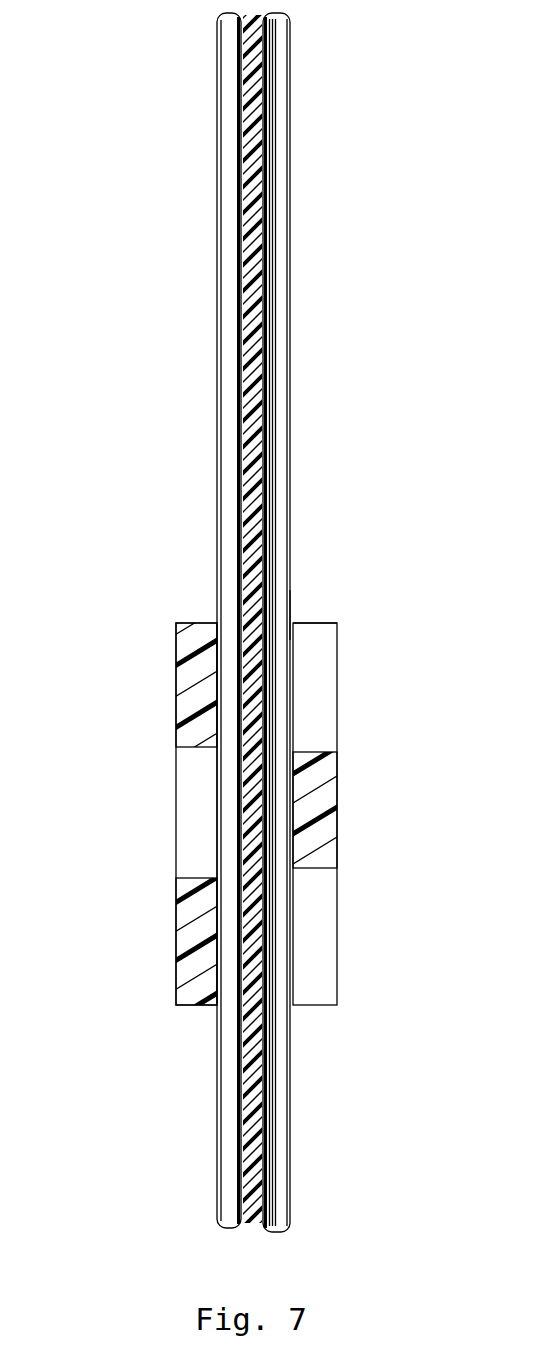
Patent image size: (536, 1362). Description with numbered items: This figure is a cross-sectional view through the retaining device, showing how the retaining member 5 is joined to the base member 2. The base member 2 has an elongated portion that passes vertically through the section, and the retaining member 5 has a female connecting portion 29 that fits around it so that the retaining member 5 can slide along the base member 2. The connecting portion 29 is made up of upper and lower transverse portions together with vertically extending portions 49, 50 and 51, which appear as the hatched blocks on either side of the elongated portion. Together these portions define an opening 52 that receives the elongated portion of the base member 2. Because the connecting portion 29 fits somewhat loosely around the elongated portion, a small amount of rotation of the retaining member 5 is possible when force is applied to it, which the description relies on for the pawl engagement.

The base member 2 is at (292, 208).
The retaining member 5 is at (337, 695).
The female connecting portion 29 is at (337, 622).
The vertically extending portion 49 is at (337, 810).
The vertically extending portion 50 is at (176, 680).
The vertically extending portion 51 is at (176, 935).
The opening 52 is at (293, 620).